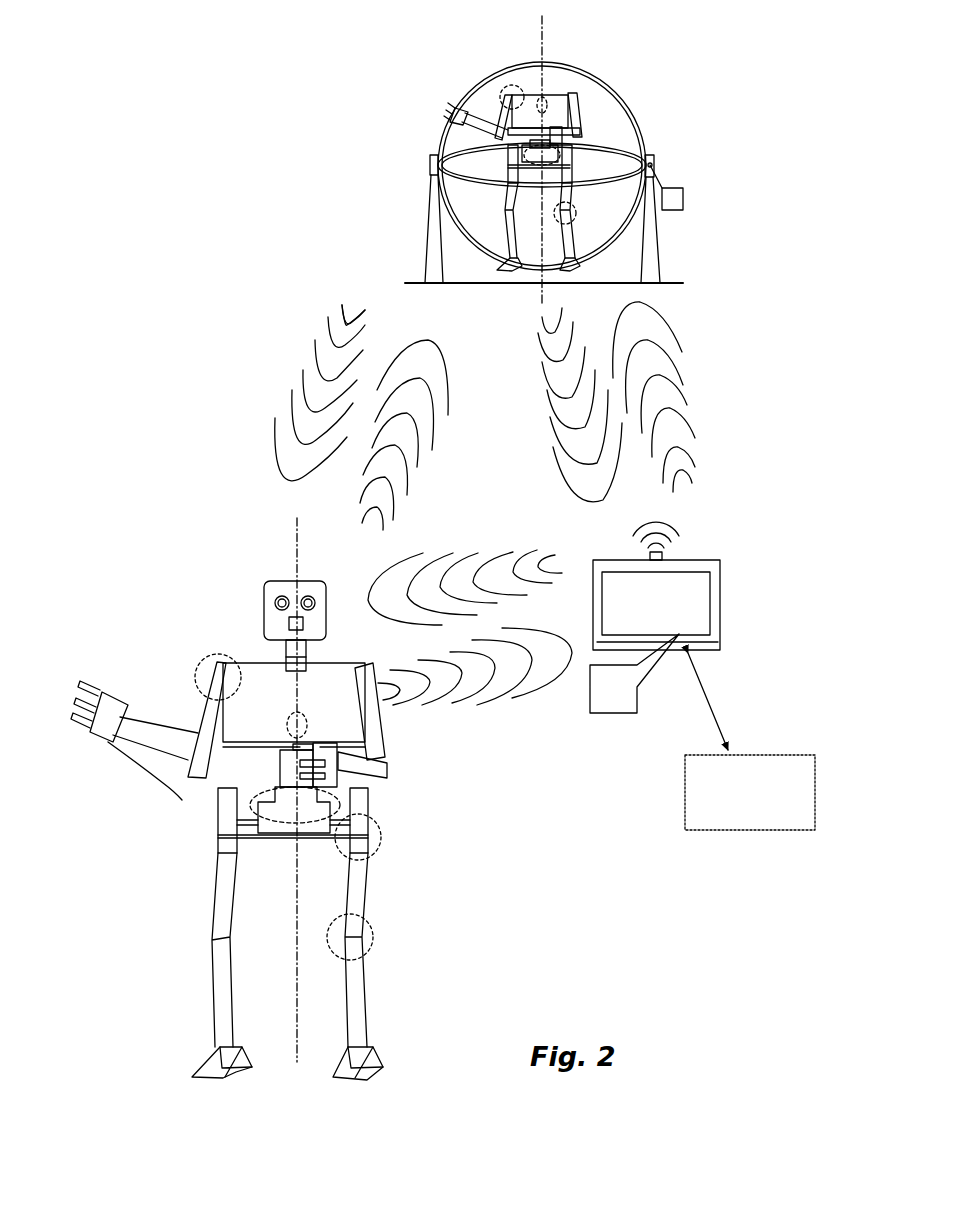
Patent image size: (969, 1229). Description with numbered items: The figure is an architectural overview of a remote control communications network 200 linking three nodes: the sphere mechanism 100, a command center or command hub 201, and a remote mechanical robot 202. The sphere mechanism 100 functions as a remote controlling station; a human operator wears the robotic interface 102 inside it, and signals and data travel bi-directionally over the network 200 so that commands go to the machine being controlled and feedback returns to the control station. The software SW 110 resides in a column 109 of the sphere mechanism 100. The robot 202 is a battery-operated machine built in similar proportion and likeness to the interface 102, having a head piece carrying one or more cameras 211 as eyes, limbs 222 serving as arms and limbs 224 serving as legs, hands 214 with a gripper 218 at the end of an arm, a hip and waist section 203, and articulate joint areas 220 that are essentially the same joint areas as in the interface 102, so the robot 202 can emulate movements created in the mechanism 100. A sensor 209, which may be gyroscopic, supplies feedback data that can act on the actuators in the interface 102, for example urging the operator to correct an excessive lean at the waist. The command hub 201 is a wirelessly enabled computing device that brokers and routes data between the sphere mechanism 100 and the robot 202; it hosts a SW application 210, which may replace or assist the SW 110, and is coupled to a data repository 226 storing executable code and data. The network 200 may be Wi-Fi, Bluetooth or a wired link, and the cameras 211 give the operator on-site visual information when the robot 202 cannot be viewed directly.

The sphere mechanism 100 is at (470, 60).
The robotic interface 102 is at (585, 113).
The column 109 is at (652, 165).
The SW 110 is at (672, 188).
The remote control communications network 200 is at (126, 289).
The command hub 201 is at (613, 557).
The mechanical robot 202 is at (190, 619).
The hip and waist section 203 is at (373, 810).
The sensor 209 is at (287, 730).
The SW application 210 is at (610, 713).
The cameras 211 is at (315, 603).
The hands 214 is at (278, 772).
The gripper hand 218 is at (280, 772).
The articulate joint areas 220 is at (373, 937).
The limbs 222 is at (182, 800).
The limbs 224 is at (345, 982).
The data repository 226 is at (720, 830).